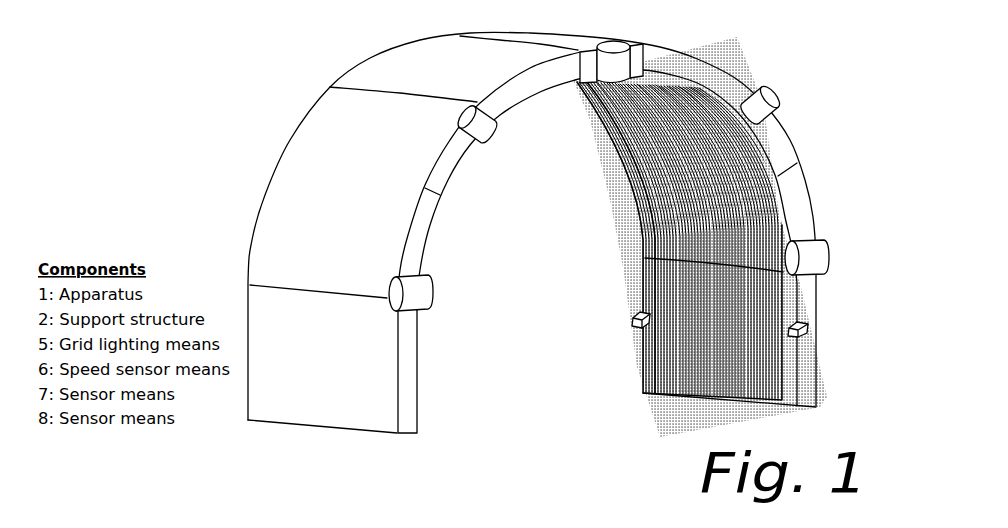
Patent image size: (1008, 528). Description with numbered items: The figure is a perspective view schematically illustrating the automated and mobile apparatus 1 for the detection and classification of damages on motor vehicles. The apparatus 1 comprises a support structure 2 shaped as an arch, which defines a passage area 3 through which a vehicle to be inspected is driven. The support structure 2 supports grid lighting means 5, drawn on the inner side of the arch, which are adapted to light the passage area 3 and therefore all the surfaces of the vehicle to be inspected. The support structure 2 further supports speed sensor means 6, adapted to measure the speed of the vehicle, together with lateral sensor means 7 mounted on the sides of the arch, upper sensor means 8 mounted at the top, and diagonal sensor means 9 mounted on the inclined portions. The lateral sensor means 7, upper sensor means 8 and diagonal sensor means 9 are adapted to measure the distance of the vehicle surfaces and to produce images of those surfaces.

The automated and mobile apparatus 1 is at (539, 267).
The support structure 2 is at (246, 243).
The passage area 3 is at (490, 360).
The grid lighting means 5 is at (717, 335).
The speed sensor means 6 is at (632, 323).
The lateral sensor means 7 is at (418, 292).
The upper sensor means 8 is at (595, 95).
The diagonal sensor means 9 is at (485, 131).